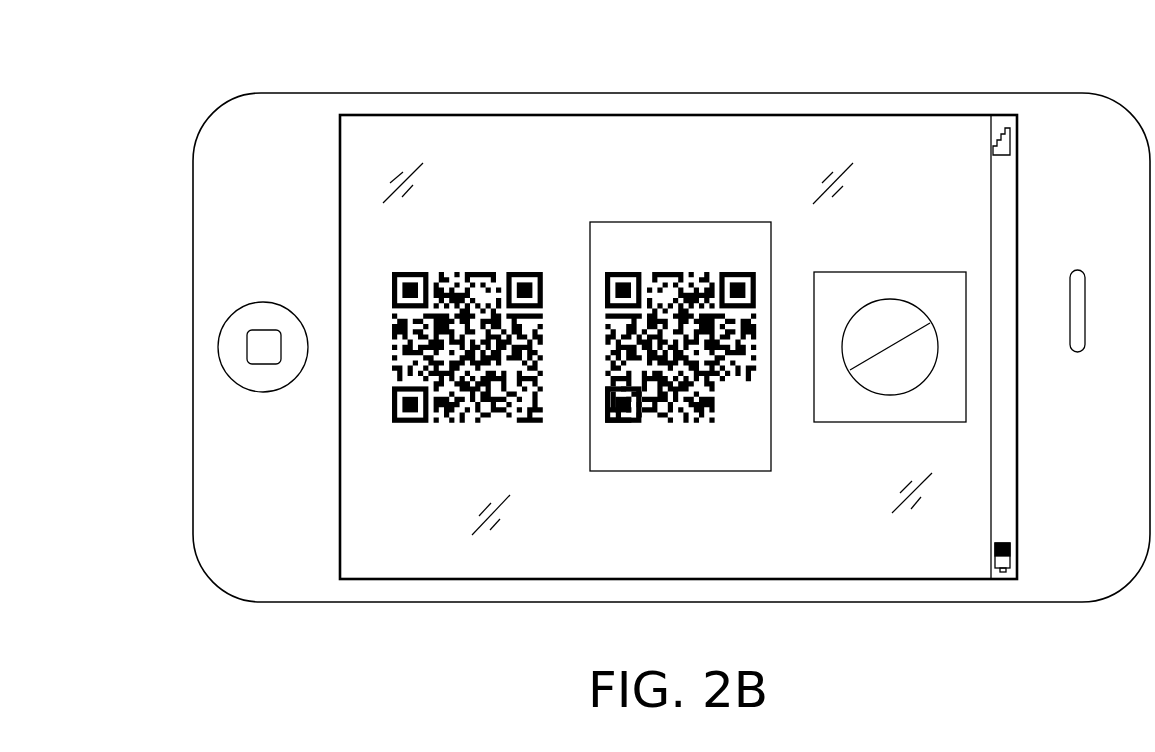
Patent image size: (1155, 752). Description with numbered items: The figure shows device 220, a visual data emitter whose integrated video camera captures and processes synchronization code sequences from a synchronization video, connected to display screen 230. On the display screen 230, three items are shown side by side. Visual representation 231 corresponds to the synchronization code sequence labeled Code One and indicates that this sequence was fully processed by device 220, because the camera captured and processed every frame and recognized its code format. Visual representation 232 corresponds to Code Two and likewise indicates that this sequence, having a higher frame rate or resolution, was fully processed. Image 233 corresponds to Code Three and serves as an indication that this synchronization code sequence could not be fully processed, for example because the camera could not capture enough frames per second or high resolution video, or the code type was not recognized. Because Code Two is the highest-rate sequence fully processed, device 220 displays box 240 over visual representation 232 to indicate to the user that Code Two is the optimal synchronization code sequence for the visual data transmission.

The device 220 is at (1053, 93).
The display screen 230 is at (822, 550).
The visual representation 231 is at (480, 270).
The visual representation 232 is at (692, 272).
The image 233 is at (898, 272).
The box 240 is at (615, 472).